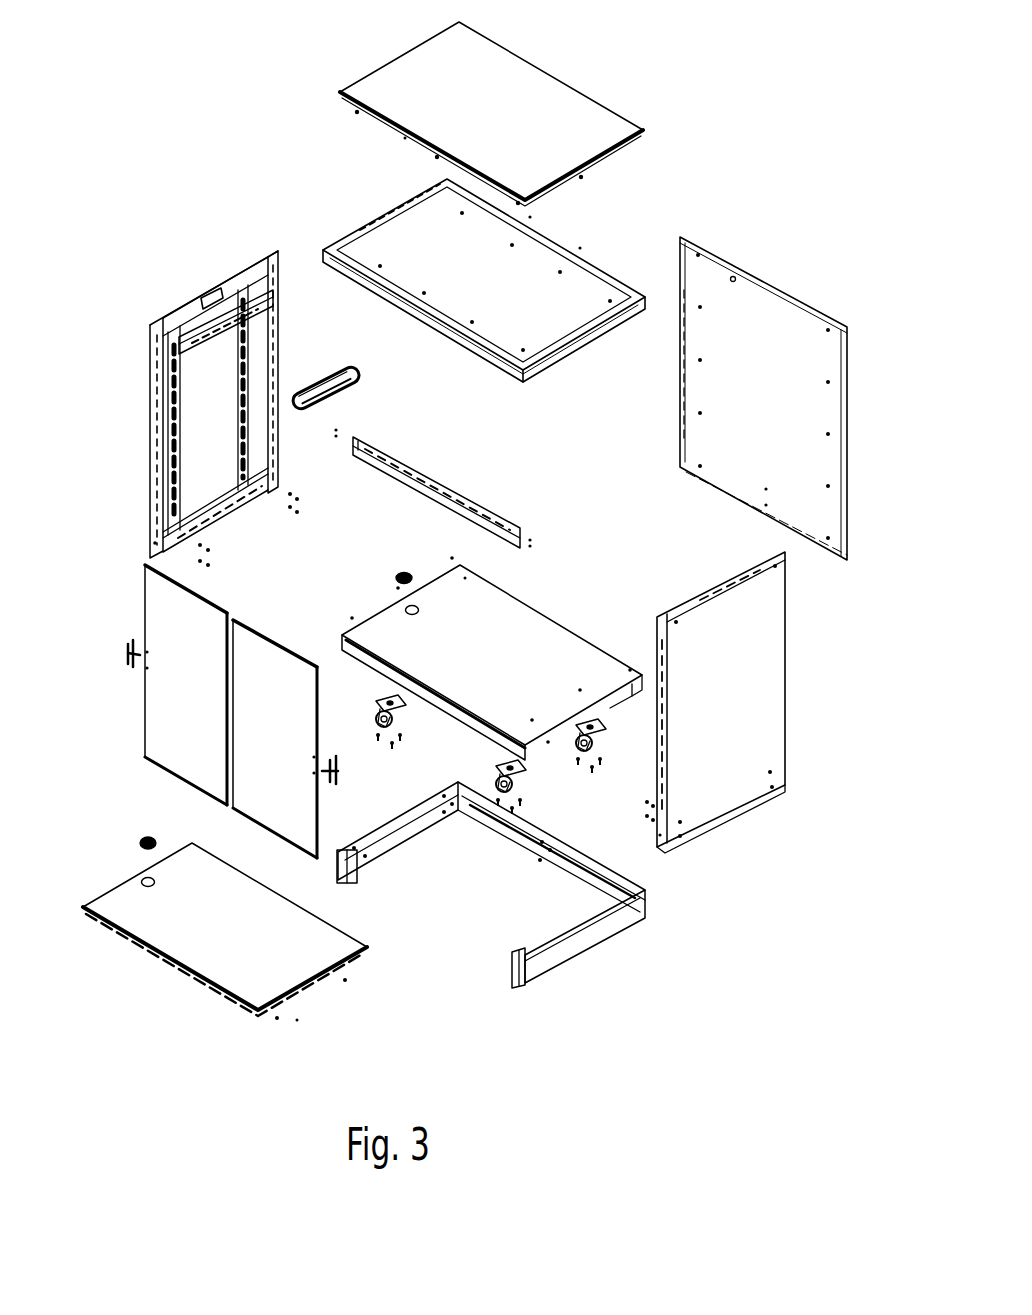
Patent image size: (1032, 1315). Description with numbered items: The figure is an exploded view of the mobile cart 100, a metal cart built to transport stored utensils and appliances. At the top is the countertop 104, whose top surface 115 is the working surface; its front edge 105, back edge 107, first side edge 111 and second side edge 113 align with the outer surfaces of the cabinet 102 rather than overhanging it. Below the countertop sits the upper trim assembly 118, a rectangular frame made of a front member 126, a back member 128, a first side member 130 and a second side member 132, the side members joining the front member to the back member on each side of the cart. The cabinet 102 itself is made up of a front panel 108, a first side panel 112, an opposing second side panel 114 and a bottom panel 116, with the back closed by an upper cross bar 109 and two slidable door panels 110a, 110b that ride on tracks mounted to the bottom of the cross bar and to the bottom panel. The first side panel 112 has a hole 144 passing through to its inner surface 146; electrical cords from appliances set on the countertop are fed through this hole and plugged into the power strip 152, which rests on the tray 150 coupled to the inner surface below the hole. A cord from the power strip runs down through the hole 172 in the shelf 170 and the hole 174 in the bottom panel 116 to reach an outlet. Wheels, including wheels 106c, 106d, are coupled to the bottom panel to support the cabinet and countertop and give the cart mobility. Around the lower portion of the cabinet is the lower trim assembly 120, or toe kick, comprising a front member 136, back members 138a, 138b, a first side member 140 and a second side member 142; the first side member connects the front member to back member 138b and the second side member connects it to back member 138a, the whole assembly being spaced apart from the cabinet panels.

The mobile cart 100 is at (762, 96).
The cabinet 102 is at (820, 660).
The countertop 104 is at (540, 96).
The front edge 105 is at (617, 110).
The wheel 106c is at (528, 790).
The wheel 106d is at (410, 716).
The back edge 107 is at (385, 122).
The front panel 108 is at (833, 413).
The upper cross bar 109 is at (440, 485).
The door panel 110a is at (320, 791).
The door panel 110b is at (145, 700).
The first side edge 111 is at (397, 56).
The first side panel 112 is at (280, 328).
The second side edge 113 is at (612, 148).
The second side panel 114 is at (750, 742).
The top surface 115 is at (467, 67).
The bottom panel 116 is at (525, 605).
The upper trim assembly 118 is at (568, 378).
The lower trim assembly 120 is at (534, 888).
The front member 126 is at (555, 247).
The back member 128 is at (447, 332).
The first side member 130 is at (375, 220).
The second side member 132 is at (590, 335).
The front member 136 is at (635, 876).
The back member 138a is at (515, 978).
The back member 138b is at (350, 878).
The first side member 140 is at (430, 806).
The second side member 142 is at (640, 912).
The hole 144 is at (207, 300).
The inner surface 146 is at (235, 412).
The tray 150 is at (245, 316).
The power strip 152 is at (362, 386).
The shelf 170 is at (235, 995).
The hole 172 is at (418, 615).
The hole 174 is at (155, 885).